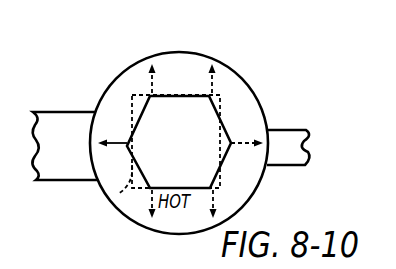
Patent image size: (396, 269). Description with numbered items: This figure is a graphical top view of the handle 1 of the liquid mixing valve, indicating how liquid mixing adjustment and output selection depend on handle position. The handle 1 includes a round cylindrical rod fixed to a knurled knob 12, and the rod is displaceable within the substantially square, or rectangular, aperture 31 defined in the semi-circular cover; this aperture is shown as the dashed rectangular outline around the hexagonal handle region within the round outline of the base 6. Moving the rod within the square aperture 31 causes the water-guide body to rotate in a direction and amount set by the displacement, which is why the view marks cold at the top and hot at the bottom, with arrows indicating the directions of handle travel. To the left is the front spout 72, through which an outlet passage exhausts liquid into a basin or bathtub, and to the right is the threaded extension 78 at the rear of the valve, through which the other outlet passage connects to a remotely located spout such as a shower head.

The handle 1 is at (205, 132).
The base 6 is at (93, 104).
The knurled knob 12 is at (182, 96).
The square aperture 31 is at (117, 196).
The front spout 72 is at (71, 181).
The threaded extension 78 is at (311, 129).